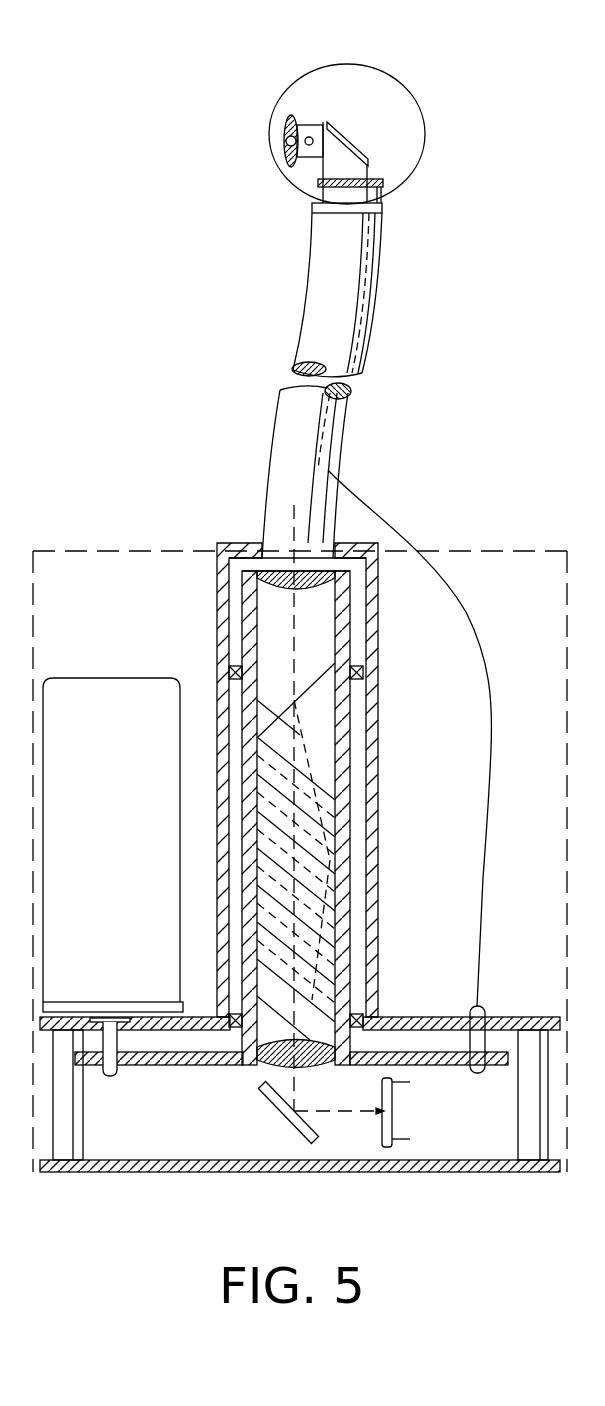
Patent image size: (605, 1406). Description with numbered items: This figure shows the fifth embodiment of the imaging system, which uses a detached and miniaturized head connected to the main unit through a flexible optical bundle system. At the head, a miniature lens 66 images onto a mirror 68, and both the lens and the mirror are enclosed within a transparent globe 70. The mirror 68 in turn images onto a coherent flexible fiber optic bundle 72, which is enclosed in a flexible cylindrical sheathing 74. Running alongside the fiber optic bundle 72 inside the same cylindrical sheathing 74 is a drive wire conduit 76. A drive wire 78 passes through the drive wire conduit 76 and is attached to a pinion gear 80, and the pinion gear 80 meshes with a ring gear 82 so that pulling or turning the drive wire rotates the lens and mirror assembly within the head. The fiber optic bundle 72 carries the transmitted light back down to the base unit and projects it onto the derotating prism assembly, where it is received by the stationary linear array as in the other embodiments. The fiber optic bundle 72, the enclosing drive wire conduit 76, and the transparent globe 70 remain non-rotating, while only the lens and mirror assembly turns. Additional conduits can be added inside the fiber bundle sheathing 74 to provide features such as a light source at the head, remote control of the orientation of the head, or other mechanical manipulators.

The miniature lens 66 is at (308, 118).
The mirror 68 is at (347, 138).
The transparent globe 70 is at (418, 113).
The coherent flexible fiber optic bundle 72 is at (337, 267).
The flexible cylindrical sheathing 74 is at (295, 362).
The drive wire conduit 76 is at (372, 297).
The drive wire 78 is at (378, 514).
The pinion gear 80 is at (381, 182).
The ring gear 82 is at (318, 182).